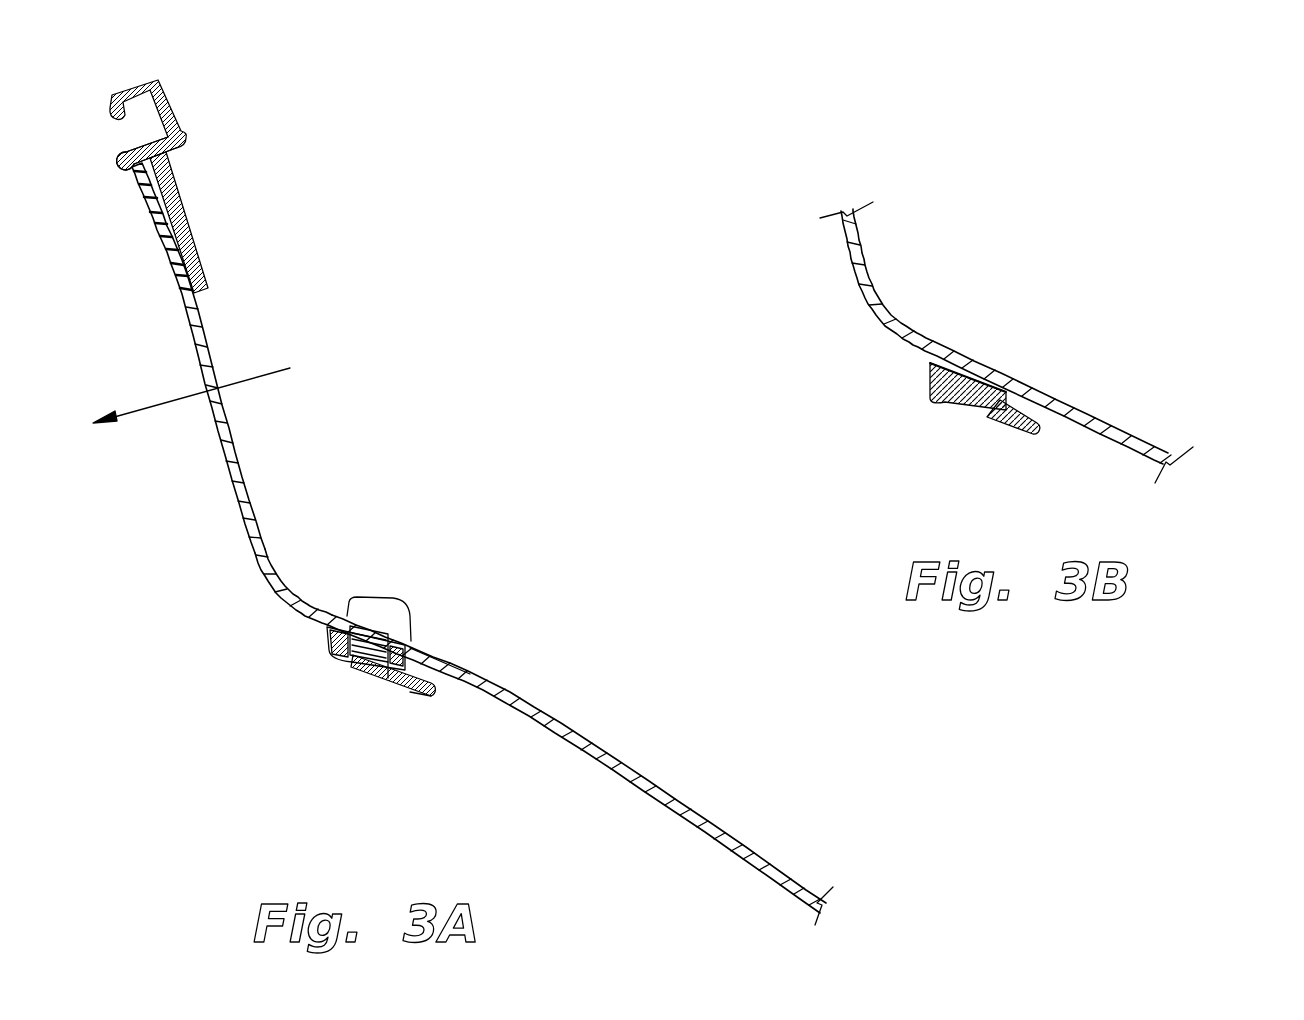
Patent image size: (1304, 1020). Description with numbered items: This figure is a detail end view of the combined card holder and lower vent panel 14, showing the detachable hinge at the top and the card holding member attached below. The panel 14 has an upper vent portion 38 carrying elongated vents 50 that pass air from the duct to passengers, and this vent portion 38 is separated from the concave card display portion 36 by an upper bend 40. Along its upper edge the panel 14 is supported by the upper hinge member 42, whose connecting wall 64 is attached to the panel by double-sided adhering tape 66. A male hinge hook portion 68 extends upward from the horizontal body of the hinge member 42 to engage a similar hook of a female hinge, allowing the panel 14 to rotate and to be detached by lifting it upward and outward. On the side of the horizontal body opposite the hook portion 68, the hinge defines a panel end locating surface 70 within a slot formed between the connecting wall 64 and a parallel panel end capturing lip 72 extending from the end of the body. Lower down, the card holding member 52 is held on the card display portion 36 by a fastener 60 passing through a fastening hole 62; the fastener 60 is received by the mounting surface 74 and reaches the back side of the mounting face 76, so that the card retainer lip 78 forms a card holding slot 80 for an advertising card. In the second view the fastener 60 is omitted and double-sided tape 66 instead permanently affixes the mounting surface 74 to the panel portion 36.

In FIG. 3A, the combined card holder and lower vent panel 14 is at (398, 421).
In FIG. 3A, the card display portion 36 is at (570, 730).
In FIG. 3B, the card display portion 36 is at (1120, 430).
In FIG. 3A, the upper vent portion 38 is at (213, 340).
In FIG. 3A, the upper bend 40 is at (250, 557).
In FIG. 3A, the upper hinge member 42 is at (196, 130).
In FIG. 3A, the elongated vents 50 is at (220, 404).
In FIG. 3A, the card holding member 52 is at (387, 678).
In FIG. 3A, the card holding member fastener 60 is at (357, 597).
In FIG. 3A, the fastening hole 62 is at (410, 648).
In FIG. 3A, the connecting wall 64 is at (190, 228).
In FIG. 3A, the double-sided adhering tape 66 is at (178, 277).
In FIG. 3B, the double-sided adhering tape 66 is at (932, 363).
In FIG. 3A, the male hinge hook portion 68 is at (162, 92).
In FIG. 3A, the panel end locating surface 70 is at (165, 170).
In FIG. 3A, the panel end capturing lip 72 is at (128, 184).
In FIG. 3A, the mounting surface 74 is at (333, 628).
In FIG. 3B, the mounting surface 74 is at (960, 407).
In FIG. 3A, the mounting face 76 is at (367, 680).
In FIG. 3B, the mounting face 76 is at (987, 425).
In FIG. 3A, the card retainer lip 78 is at (410, 692).
In FIG. 3A, the card holding slot 80 is at (445, 684).